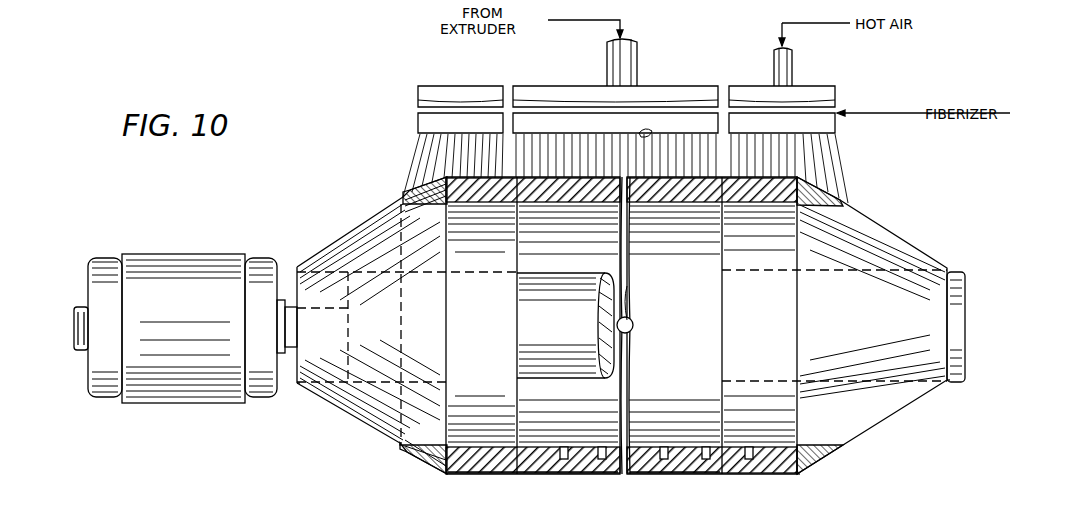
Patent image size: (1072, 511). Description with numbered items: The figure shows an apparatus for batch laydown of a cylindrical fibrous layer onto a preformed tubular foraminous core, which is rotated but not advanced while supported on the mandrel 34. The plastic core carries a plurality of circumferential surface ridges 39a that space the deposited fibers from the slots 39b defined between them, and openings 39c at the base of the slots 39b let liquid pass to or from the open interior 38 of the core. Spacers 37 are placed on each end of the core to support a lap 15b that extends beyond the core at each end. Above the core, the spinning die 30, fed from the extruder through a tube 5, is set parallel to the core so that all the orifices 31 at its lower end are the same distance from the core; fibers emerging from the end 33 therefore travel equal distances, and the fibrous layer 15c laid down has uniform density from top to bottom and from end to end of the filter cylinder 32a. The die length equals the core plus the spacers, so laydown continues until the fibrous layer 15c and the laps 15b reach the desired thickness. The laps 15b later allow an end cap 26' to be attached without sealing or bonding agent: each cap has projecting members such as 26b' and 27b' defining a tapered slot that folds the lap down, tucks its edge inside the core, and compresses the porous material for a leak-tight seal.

The extruder feed tube 5 is at (607, 56).
The spinning die 30 is at (698, 88).
The orifices 31 is at (647, 131).
The end 33 is at (443, 133).
The lap 15b is at (840, 194).
The fibrous layer 15c is at (647, 472).
The spacers 37 is at (362, 372).
The mandrel 34 is at (967, 320).
The open interior 38 is at (607, 409).
The circumferential surface ridges 39a is at (602, 467).
The slots 39b is at (710, 470).
The openings 39c is at (706, 446).
The filter cylinder 32a is at (545, 470).
The projecting member 27b' is at (357, 447).
The projecting member 26b' is at (866, 490).
The end cap 26' is at (969, 445).